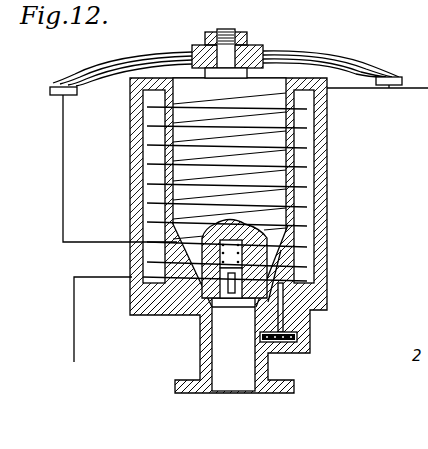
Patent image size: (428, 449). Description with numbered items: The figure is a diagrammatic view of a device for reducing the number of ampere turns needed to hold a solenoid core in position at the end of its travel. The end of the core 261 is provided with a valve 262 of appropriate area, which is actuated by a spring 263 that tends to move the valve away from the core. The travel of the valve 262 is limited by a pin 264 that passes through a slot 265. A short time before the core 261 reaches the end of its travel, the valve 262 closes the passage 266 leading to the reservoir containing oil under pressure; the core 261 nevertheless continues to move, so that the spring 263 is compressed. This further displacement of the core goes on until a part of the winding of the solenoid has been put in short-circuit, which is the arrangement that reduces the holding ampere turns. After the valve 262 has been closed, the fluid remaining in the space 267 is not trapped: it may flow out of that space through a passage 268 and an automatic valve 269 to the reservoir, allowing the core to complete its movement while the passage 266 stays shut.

The core 261 is at (328, 280).
The valve 262 is at (265, 277).
The spring 263 is at (200, 237).
The pin 264 is at (120, 228).
The slot 265 is at (187, 317).
The passage 266 is at (237, 381).
The space 267 is at (297, 237).
The passage 268 is at (311, 330).
The automatic valve 269 is at (260, 335).